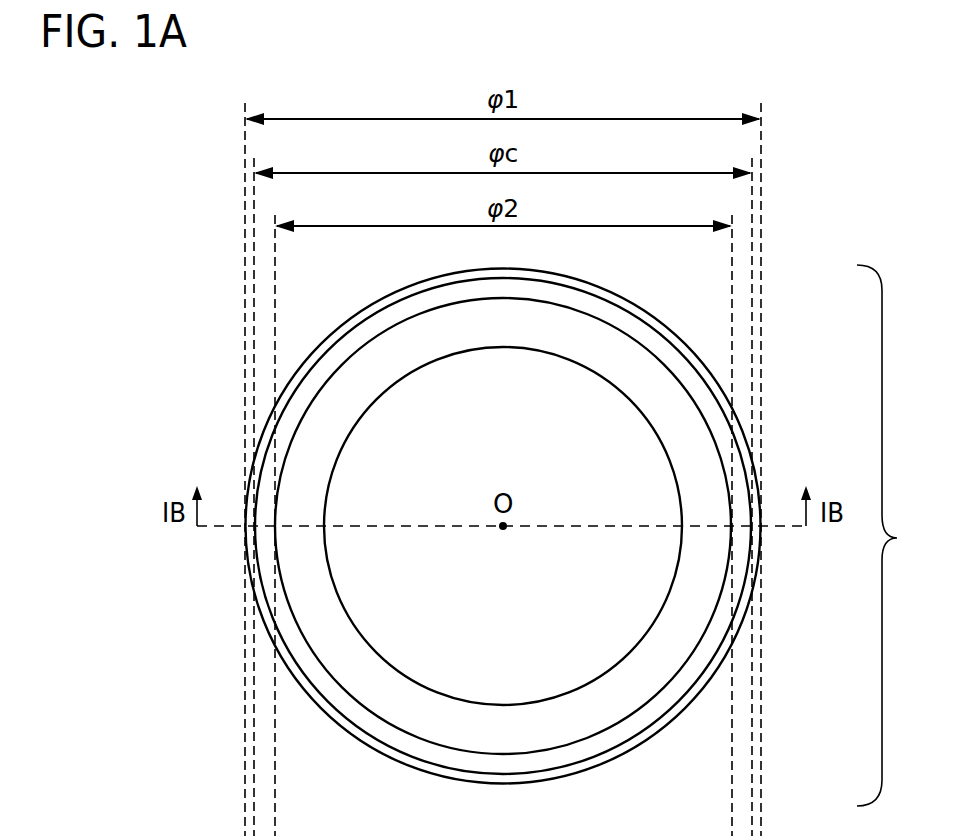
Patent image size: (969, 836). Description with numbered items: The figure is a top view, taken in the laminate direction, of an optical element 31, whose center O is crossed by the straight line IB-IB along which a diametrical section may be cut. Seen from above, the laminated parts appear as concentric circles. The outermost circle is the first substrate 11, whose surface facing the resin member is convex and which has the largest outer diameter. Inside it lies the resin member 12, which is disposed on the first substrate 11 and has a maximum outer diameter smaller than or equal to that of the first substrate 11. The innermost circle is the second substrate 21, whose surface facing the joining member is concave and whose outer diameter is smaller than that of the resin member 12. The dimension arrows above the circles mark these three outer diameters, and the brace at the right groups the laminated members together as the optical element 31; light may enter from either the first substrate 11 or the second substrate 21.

The first substrate 11 is at (650, 733).
The resin member 12 is at (715, 632).
The second substrate 21 is at (625, 583).
The optical element 31 is at (895, 535).